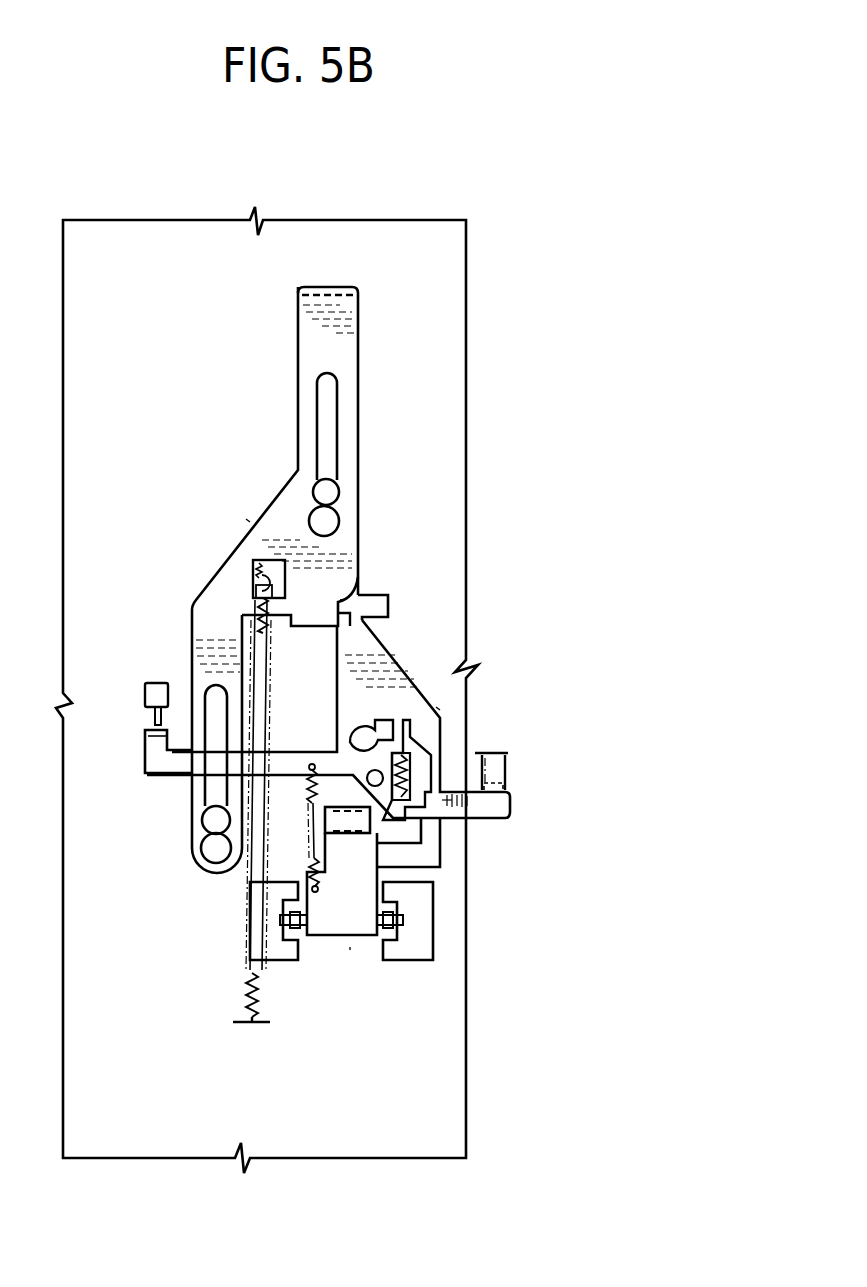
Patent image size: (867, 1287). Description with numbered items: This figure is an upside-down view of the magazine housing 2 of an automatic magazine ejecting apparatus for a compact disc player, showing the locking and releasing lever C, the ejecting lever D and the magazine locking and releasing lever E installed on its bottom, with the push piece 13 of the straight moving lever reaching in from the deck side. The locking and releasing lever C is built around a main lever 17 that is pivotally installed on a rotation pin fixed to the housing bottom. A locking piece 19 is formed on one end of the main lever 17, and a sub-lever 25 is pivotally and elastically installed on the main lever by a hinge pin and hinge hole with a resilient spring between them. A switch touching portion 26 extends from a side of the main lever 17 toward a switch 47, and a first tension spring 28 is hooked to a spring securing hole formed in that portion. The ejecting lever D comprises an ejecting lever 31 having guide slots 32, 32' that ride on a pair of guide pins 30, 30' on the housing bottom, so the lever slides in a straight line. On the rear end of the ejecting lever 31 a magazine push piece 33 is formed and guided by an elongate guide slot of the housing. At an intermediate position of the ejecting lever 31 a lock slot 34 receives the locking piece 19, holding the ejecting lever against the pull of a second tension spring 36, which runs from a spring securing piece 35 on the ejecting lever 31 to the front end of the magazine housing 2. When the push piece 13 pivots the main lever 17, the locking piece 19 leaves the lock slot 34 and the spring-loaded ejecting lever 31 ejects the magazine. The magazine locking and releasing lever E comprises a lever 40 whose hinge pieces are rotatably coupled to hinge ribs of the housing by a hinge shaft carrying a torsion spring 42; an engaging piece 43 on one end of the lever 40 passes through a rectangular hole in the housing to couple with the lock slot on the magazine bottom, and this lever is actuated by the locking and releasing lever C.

The magazine housing 2 is at (390, 255).
The push piece 13 is at (505, 790).
The main lever 17 is at (373, 658).
The locking piece 19 is at (362, 595).
The sub-lever 25 is at (493, 805).
The switch touching portion 26 is at (145, 730).
The first tension spring 28 is at (307, 790).
The guide pin 30 is at (367, 497).
The guide pin 30' is at (168, 834).
The ejecting lever 31 is at (285, 512).
The guide slot 32 is at (171, 794).
The guide slot 32' is at (372, 426).
The magazine push piece 33 is at (330, 287).
The lock slot 34 is at (347, 588).
The spring securing piece 35 is at (255, 560).
The second tension spring 36 is at (250, 990).
The magazine locking and releasing lever 40 is at (365, 938).
The torsion spring 42 is at (405, 775).
The engaging piece 43 is at (348, 810).
The switch 47 is at (158, 683).
The ejecting lever D is at (246, 519).
The locking and releasing lever C is at (440, 705).
The magazine locking and releasing lever E is at (350, 950).